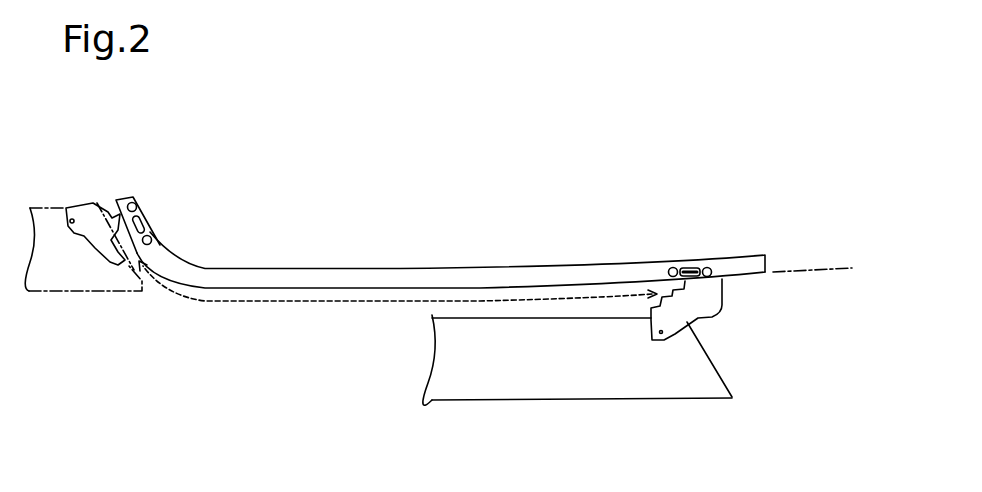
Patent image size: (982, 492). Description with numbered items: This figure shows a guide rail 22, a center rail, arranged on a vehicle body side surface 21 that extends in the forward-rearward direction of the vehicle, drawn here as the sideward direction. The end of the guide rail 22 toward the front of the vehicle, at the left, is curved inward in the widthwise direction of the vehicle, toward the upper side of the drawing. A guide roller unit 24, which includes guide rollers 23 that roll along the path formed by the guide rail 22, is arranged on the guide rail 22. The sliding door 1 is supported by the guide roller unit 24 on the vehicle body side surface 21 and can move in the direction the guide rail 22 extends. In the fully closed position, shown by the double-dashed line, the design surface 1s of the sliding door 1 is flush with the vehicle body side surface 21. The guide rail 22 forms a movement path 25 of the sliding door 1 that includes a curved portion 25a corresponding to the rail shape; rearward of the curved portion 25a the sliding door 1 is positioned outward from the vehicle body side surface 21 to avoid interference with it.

The sliding door 1 is at (577, 383).
The design surface 1s is at (480, 401).
The vehicle body side surface 21 is at (808, 273).
The guide rail 22 is at (451, 255).
The movement path 25 is at (364, 268).
The curved portion 25a is at (178, 262).
The guide rollers 23 is at (707, 267).
The guide roller unit 24 is at (722, 312).